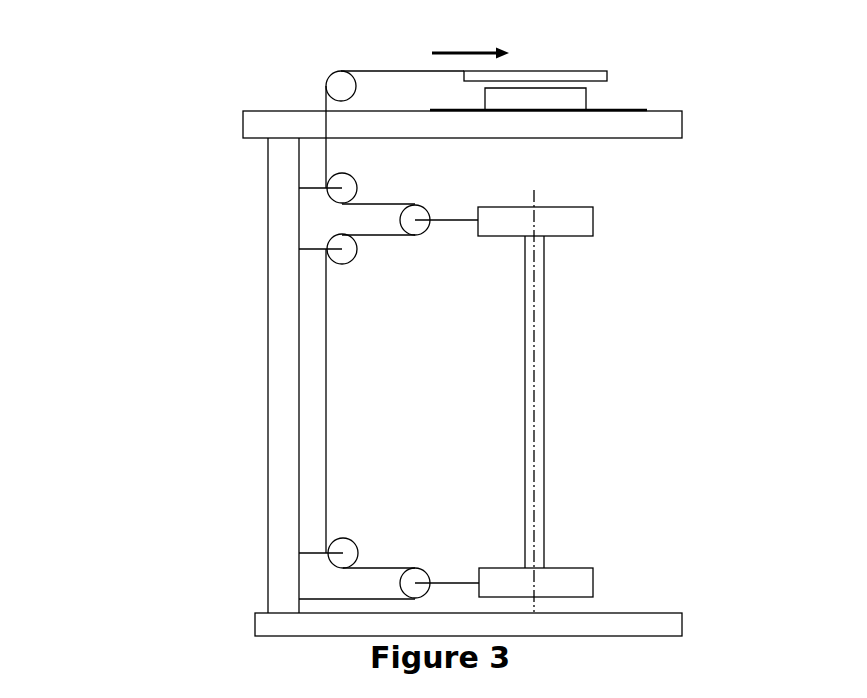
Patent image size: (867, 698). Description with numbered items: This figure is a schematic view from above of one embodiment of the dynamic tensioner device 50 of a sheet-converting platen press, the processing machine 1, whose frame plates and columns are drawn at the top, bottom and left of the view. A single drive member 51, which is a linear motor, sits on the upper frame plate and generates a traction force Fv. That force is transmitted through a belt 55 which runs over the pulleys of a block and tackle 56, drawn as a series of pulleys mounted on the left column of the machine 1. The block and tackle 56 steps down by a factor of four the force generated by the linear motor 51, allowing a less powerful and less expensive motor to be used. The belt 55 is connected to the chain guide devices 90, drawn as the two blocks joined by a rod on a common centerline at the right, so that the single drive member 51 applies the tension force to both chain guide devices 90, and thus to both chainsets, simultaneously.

The processing machine 1 is at (690, 107).
The tensioner device 50 is at (163, 248).
The drive member 51 is at (553, 57).
The belt 55 is at (390, 58).
The block and tackle 56 is at (365, 513).
The guide device 90 is at (593, 550).